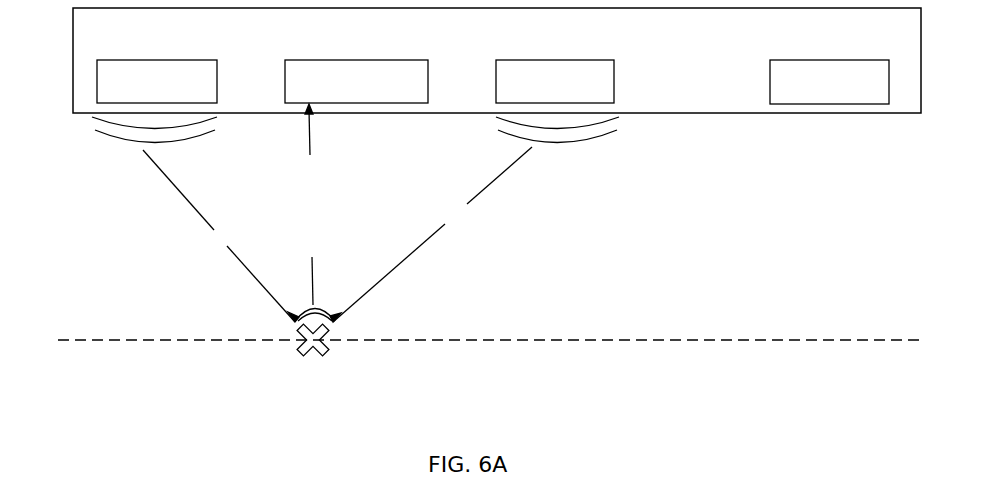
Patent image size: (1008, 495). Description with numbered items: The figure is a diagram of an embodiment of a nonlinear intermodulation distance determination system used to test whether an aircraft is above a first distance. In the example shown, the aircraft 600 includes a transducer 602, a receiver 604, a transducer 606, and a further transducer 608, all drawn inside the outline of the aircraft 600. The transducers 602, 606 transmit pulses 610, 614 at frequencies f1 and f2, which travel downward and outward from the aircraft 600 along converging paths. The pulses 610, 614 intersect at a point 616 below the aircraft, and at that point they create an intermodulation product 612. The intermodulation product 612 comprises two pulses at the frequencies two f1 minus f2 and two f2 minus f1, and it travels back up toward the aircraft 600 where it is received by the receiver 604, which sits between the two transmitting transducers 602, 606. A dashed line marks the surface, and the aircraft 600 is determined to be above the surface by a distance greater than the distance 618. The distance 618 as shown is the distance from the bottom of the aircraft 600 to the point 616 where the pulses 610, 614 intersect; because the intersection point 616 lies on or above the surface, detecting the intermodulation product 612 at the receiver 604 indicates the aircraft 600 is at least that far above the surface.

The aircraft 600 is at (73, 36).
The transducer 602 is at (97, 68).
The receiver 604 is at (285, 68).
The transducer 606 is at (496, 68).
The transducer 608 is at (770, 69).
The pulse 610 is at (163, 173).
The intermodulation product 612 is at (310, 158).
The pulse 614 is at (511, 165).
The intersection point 616 is at (300, 350).
The distance 618 is at (858, 341).